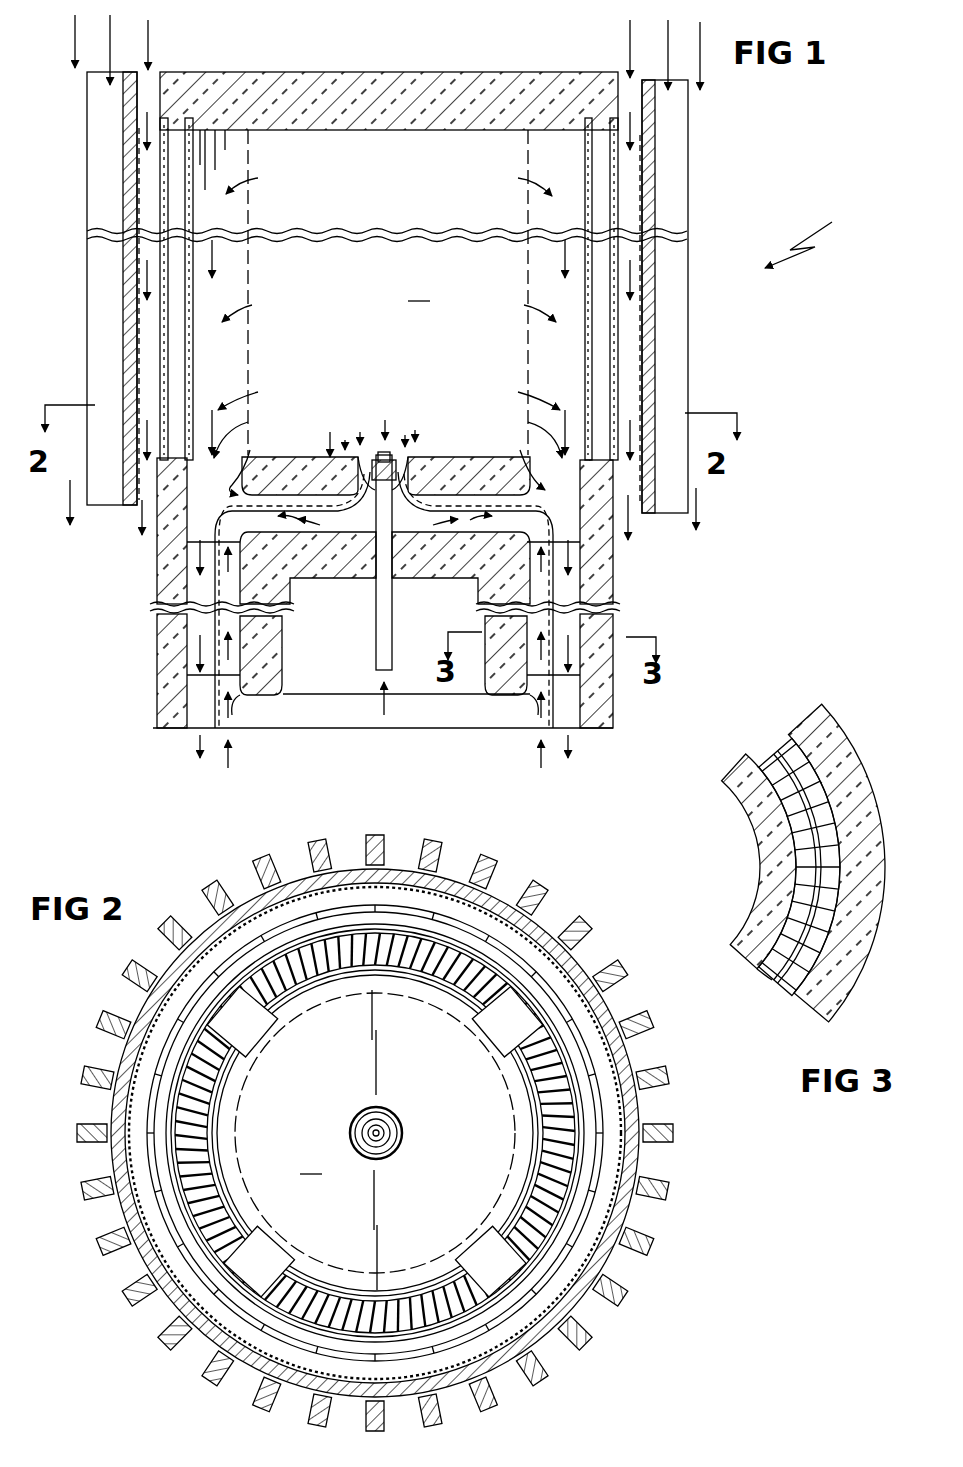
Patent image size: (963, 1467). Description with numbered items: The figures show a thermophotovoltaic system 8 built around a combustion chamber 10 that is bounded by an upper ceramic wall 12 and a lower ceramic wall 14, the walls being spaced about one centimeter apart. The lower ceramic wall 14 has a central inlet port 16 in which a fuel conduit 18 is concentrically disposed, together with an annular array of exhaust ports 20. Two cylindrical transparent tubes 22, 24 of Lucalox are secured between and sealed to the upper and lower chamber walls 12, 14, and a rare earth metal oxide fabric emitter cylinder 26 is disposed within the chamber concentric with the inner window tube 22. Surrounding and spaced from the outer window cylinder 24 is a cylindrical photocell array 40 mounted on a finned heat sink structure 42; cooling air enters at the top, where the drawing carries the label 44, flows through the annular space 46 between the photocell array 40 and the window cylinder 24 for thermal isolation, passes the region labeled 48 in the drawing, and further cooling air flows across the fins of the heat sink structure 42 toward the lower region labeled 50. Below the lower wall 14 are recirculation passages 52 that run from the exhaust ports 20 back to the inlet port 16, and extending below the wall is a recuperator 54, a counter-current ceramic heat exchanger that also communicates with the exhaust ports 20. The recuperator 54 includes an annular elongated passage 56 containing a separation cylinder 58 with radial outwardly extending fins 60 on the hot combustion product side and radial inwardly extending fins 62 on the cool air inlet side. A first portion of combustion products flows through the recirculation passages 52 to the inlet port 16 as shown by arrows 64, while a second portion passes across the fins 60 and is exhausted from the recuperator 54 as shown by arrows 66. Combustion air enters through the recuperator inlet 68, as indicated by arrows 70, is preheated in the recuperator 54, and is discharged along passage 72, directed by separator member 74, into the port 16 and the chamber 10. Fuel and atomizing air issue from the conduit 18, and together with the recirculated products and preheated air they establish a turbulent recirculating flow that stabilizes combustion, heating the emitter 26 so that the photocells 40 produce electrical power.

In FIG. 1, the thermophotovoltaic system 8 is at (808, 239).
In FIG. 1, the combustion chamber 10 is at (420, 290).
In FIG. 1, the upper ceramic wall 12 is at (328, 72).
In FIG. 1, the lower ceramic wall 14 is at (330, 455).
In FIG. 2, the lower ceramic wall 14 is at (338, 1140).
In FIG. 1, the central inlet port 16 is at (398, 468).
In FIG. 2, the central inlet port 16 is at (378, 1107).
In FIG. 1, the fuel conduit 18 is at (370, 632).
In FIG. 2, the fuel conduit 18 is at (395, 1143).
In FIG. 1, the exhaust ports 20 is at (228, 430).
In FIG. 2, the exhaust ports 20 is at (300, 992).
In FIG. 1, the cylindrical transparent tube 22 is at (590, 195).
In FIG. 2, the cylindrical transparent tube 22 is at (578, 1108).
In FIG. 1, the cylindrical transparent tube 24 is at (612, 212).
In FIG. 2, the cylindrical transparent tube 24 is at (606, 1135).
In FIG. 1, the emitter cylinder 26 is at (526, 185).
In FIG. 2, the emitter cylinder 26 is at (392, 990).
In FIG. 1, the photocell array 40 is at (643, 357).
In FIG. 2, the photocell array 40 is at (616, 1240).
In FIG. 1, the finned heat sink structure 42 is at (112, 160).
In FIG. 2, the finned heat sink structure 42 is at (630, 1265).
In FIG. 1, the inlet 44 is at (150, 82).
In FIG. 1, the annular space 46 is at (148, 336).
In FIG. 2, the annular space 46 is at (630, 1172).
In FIG. 1, the annular passage 48 is at (172, 352).
In FIG. 2, the annular passage 48 is at (616, 1148).
In FIG. 1, the outlet 50 is at (138, 500).
In FIG. 1, the recirculation passages 52 is at (310, 472).
In FIG. 1, the recuperator 54 is at (615, 582).
In FIG. 3, the recuperator 54 is at (858, 745).
In FIG. 1, the annular elongated passage 56 is at (196, 698).
In FIG. 3, the annular elongated passage 56 is at (786, 988).
In FIG. 1, the separation cylinder 58 is at (212, 628).
In FIG. 2, the separation cylinder 58 is at (196, 1195).
In FIG. 3, the separation cylinder 58 is at (782, 758).
In FIG. 1, the radial outwardly extending fins 60 is at (196, 586).
In FIG. 2, the radial outwardly extending fins 60 is at (340, 1140).
In FIG. 3, the radial outwardly extending fins 60 is at (800, 740).
In FIG. 1, the radial inwardly extending fins 62 is at (268, 586).
In FIG. 3, the radial inwardly extending fins 62 is at (770, 775).
In FIG. 1, the arrows 64 is at (360, 470).
In FIG. 1, the arrows 66 is at (195, 735).
In FIG. 1, the recuperator inlet 68 is at (232, 690).
In FIG. 1, the arrows 70 is at (380, 530).
In FIG. 1, the passage 72 is at (438, 528).
In FIG. 1, the separator member 74 is at (470, 520).
In FIG. 2, the separator member 74 is at (402, 1130).